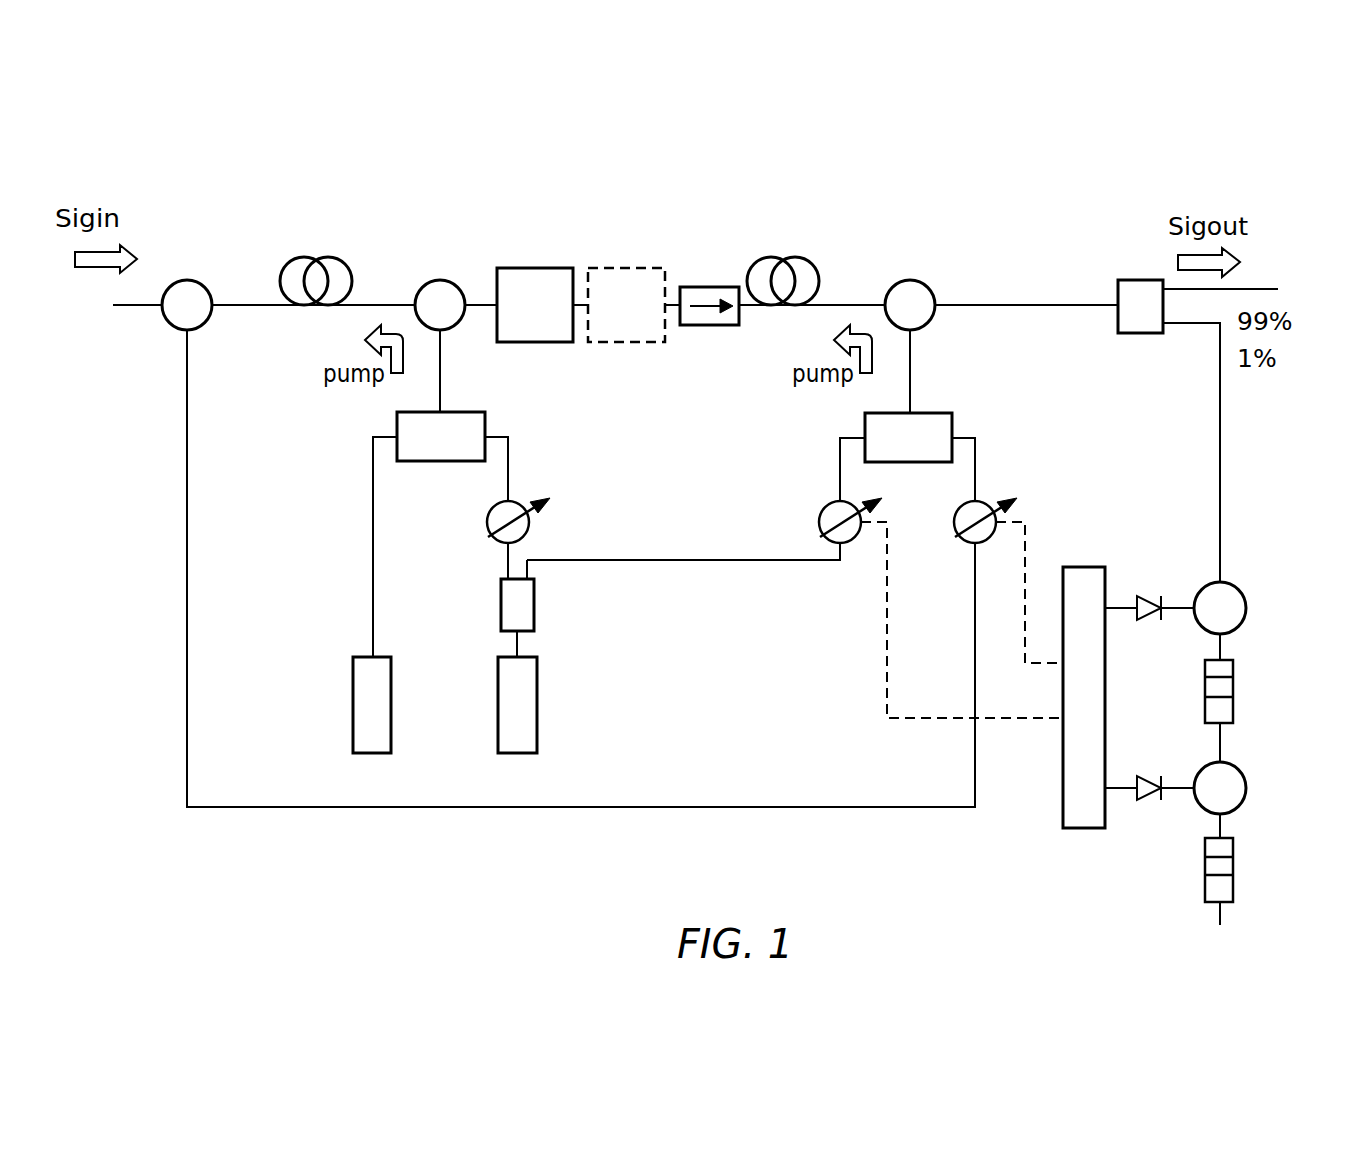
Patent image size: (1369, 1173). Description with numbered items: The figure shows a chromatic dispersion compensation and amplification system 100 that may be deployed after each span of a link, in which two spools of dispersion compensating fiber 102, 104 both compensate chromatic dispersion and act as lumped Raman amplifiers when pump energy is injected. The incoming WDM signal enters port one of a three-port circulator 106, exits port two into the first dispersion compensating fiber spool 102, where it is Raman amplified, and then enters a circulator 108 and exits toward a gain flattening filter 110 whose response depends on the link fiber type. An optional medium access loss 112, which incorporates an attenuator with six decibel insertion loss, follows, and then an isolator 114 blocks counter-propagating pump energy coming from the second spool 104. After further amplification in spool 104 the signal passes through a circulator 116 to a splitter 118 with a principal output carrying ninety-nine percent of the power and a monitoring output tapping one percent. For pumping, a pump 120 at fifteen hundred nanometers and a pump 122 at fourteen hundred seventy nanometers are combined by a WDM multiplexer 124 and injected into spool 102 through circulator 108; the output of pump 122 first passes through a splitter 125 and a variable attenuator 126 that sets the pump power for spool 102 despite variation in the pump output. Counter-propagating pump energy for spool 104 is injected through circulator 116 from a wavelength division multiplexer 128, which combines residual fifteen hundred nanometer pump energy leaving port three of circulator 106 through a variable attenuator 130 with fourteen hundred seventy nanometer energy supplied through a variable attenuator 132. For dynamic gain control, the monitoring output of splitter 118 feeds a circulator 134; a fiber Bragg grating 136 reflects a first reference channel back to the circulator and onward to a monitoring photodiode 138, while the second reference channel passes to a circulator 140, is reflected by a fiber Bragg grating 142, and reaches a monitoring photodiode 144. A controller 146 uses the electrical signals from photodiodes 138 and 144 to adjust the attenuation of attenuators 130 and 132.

The chromatic dispersion compensation and amplification system 100 is at (803, 165).
The dispersion compensating fiber spool 102 is at (292, 260).
The dispersion compensating fiber spool 104 is at (813, 262).
The three-port circulator 106 is at (163, 317).
The circulator 108 is at (457, 323).
The gain flattening filter 110 is at (558, 268).
The medium access loss (MAL) 112 is at (627, 268).
The isolator 114 is at (702, 325).
The circulator 116 is at (927, 287).
The splitter 118 is at (1130, 334).
The pump 120 is at (367, 657).
The pump 122 is at (508, 657).
The WDM multiplexer 124 is at (486, 424).
The splitter 125 is at (501, 595).
The variable attenuator 126 is at (514, 498).
The wavelength division multiplexer 128 is at (930, 413).
The variable attenuator 130 is at (988, 497).
The variable attenuator 132 is at (823, 520).
The circulator 134 is at (1245, 595).
The fiber Bragg grating 136 is at (1233, 665).
The monitoring photodiode 138 is at (1145, 597).
The circulator 140 is at (1245, 765).
The fiber Bragg grating 142 is at (1233, 845).
The monitoring photodiode 144 is at (1150, 800).
The controller 146 is at (1063, 787).